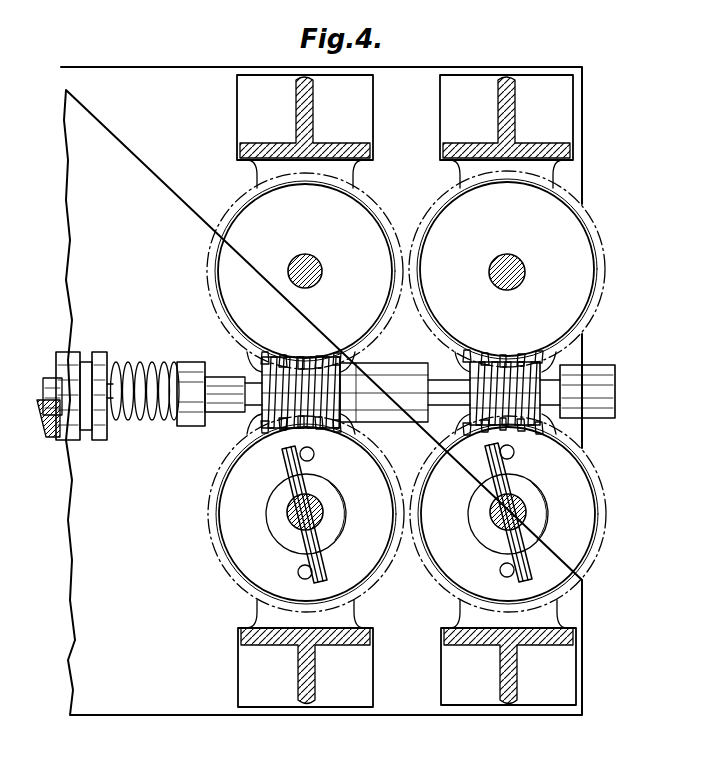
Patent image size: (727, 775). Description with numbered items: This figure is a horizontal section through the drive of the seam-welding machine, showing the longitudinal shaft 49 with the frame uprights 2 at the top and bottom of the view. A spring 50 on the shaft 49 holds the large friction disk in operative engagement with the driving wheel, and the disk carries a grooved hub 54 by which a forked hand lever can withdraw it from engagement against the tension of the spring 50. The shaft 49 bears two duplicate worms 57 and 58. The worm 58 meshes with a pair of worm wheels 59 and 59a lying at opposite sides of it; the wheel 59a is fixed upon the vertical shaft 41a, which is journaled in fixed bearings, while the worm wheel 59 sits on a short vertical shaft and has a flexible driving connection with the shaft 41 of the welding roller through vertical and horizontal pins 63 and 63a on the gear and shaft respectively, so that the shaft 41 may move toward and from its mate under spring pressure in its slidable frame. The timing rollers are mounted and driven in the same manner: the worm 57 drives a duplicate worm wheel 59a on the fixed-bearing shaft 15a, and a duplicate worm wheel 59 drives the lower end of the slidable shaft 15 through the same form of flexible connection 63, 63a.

The uprights 2 is at (368, 153).
The worm wheel 59a is at (608, 222).
The vertical shaft 15a is at (290, 260).
The vertical shaft 41a is at (523, 275).
The worm wheel 59 is at (225, 553).
The horizontal pin 63a is at (318, 492).
The vertical pin 63 is at (296, 455).
The vertical shaft 15 is at (290, 520).
The vertical shaft 41 is at (527, 512).
The grooved hub 54 is at (72, 440).
The spring 50 is at (140, 421).
The longitudinal shaft 49 is at (228, 432).
The worm 57 is at (328, 384).
The worm 58 is at (545, 381).